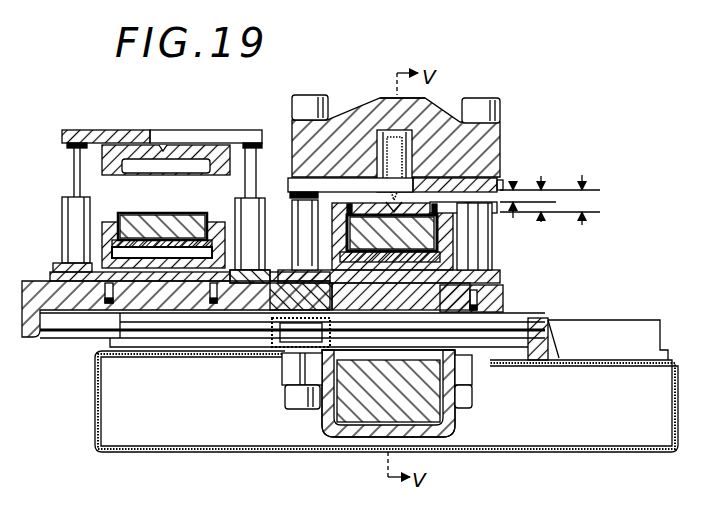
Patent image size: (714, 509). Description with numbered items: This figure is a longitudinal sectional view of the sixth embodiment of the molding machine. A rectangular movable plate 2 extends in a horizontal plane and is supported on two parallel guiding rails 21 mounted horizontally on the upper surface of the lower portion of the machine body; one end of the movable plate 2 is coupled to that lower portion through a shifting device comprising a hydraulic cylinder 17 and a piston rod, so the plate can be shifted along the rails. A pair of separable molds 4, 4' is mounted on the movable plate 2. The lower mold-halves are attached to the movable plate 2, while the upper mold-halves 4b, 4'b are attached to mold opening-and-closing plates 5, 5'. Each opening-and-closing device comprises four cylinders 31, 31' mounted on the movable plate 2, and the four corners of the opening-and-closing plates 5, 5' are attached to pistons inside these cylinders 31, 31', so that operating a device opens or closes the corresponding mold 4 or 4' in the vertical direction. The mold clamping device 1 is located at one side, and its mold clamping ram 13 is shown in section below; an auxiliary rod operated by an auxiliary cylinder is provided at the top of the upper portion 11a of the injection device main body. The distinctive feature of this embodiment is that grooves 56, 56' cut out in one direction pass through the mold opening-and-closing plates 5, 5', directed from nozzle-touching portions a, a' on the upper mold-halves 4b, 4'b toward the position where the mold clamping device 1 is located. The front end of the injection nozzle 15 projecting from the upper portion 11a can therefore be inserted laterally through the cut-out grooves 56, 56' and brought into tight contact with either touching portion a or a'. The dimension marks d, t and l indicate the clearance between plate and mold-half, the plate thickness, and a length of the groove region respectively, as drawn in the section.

The mold clamping device 1 is at (377, 95).
The upper portion of the injection device main body 11a is at (386, 104).
The injection nozzle 15 is at (381, 168).
The mold opening-and-closing plate 5 is at (162, 117).
The nozzle-touching portion a is at (161, 116).
The cut-out groove 56 is at (206, 114).
The upper mold-half 4b is at (104, 158).
The separable mold 4 is at (141, 208).
The cylinder 31 is at (138, 234).
The movable plate 2 is at (36, 290).
The cut-out groove 56' is at (379, 140).
The nozzle-touching portion a' is at (420, 145).
The mold opening-and-closing plate 5' is at (409, 163).
The upper mold-half 4'b is at (439, 233).
The separable mold 4' is at (413, 256).
The cylinder 31' is at (378, 235).
The gap dimension d is at (550, 188).
The thickness dimension t is at (541, 185).
The length dimension l is at (580, 187).
The guiding rail 21 is at (615, 340).
The hydraulic cylinder 17 is at (510, 363).
The mold clamping ram 13 is at (358, 408).